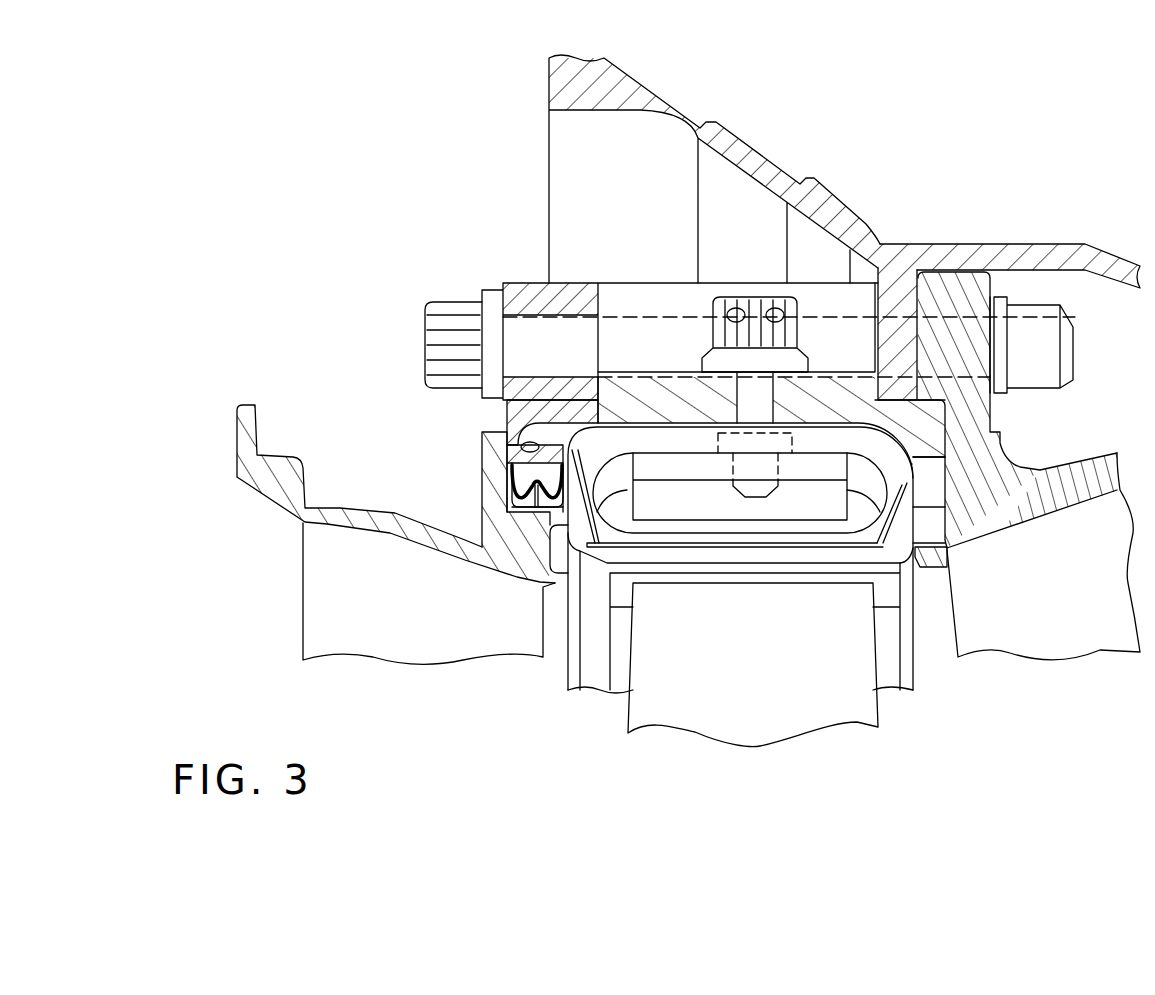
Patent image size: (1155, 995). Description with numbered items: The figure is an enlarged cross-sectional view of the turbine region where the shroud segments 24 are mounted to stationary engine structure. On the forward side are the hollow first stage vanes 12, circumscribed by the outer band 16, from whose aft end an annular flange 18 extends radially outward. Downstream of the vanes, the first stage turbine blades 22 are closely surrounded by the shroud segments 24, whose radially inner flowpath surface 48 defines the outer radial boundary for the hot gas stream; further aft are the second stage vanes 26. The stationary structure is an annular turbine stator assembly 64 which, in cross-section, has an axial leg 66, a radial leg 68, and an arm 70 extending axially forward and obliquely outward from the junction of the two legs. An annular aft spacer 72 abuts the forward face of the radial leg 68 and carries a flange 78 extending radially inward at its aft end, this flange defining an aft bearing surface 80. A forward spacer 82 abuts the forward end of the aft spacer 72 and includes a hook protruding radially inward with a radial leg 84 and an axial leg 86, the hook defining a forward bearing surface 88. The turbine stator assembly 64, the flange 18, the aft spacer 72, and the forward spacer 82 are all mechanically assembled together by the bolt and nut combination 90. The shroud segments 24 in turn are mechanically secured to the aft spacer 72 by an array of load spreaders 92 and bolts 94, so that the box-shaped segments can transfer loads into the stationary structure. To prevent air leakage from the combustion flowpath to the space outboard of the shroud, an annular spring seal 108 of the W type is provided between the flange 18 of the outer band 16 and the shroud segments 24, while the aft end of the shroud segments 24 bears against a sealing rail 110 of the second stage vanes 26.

The first stage vanes 12 is at (429, 593).
The outer band 16 is at (340, 522).
The annular flange 18 is at (497, 537).
The first stage turbine blades 22 is at (753, 665).
The shroud segments 24 is at (897, 553).
The second stage vanes 26 is at (1043, 556).
The flowpath surface 48 is at (889, 593).
The turbine stator assembly 64 is at (885, 150).
The axial leg 66 is at (1045, 252).
The radial leg 68 is at (895, 290).
The arm 70 is at (780, 180).
The aft spacer 72 is at (675, 272).
The flange 78 is at (920, 440).
The aft bearing surface 80 is at (937, 490).
The forward spacer 82 is at (532, 290).
The radial leg 84 is at (518, 420).
The axial leg 86 is at (522, 448).
The forward bearing surface 88 is at (525, 470).
The bolt and nut combination 90 is at (445, 328).
The load spreaders 92 is at (693, 507).
The bolts 94 is at (767, 300).
The spring seal 108 is at (558, 463).
The sealing rail 110 is at (938, 550).